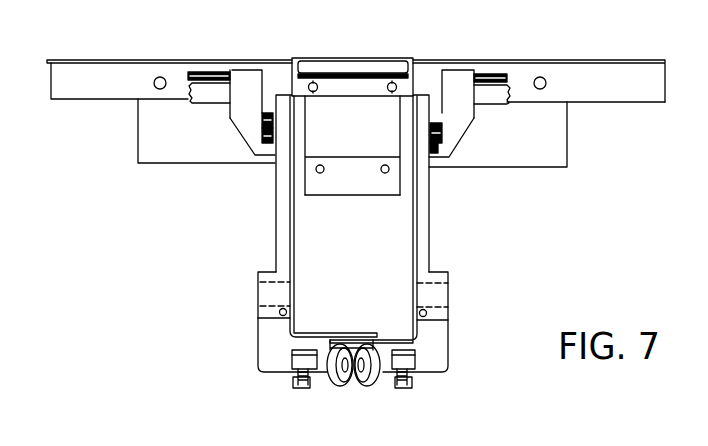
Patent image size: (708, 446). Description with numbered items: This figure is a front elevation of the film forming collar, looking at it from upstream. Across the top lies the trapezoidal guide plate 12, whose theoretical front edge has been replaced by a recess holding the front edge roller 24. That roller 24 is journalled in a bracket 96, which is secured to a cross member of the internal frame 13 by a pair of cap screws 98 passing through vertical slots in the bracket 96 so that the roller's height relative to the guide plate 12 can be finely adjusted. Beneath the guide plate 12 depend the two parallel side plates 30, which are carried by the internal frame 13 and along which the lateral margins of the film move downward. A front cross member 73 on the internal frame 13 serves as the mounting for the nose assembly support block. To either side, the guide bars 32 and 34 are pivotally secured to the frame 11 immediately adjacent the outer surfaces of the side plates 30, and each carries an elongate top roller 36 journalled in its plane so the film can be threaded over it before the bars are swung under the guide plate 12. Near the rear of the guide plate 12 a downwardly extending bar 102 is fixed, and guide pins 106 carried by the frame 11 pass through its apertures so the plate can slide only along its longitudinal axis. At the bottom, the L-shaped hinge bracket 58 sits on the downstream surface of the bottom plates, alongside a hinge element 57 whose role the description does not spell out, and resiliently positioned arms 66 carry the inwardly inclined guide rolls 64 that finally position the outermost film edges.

The guide plate 12 is at (95, 60).
The top rollers 36 is at (203, 72).
The cap screws 98 is at (311, 78).
The bracket 96 is at (347, 85).
The front edge roller 24 is at (377, 62).
The bar 102 is at (75, 90).
The guide pins 106 is at (154, 86).
The internal frame 13 is at (407, 135).
The guide bar 32 is at (210, 98).
The frame 11 is at (243, 165).
The guide bar 34 is at (493, 100).
The front cross member 73 is at (357, 187).
The side plates 30 is at (412, 243).
The pin 57 is at (427, 312).
The bracket 58 is at (440, 338).
The arm 66 is at (300, 362).
The guide roll 64 is at (337, 387).